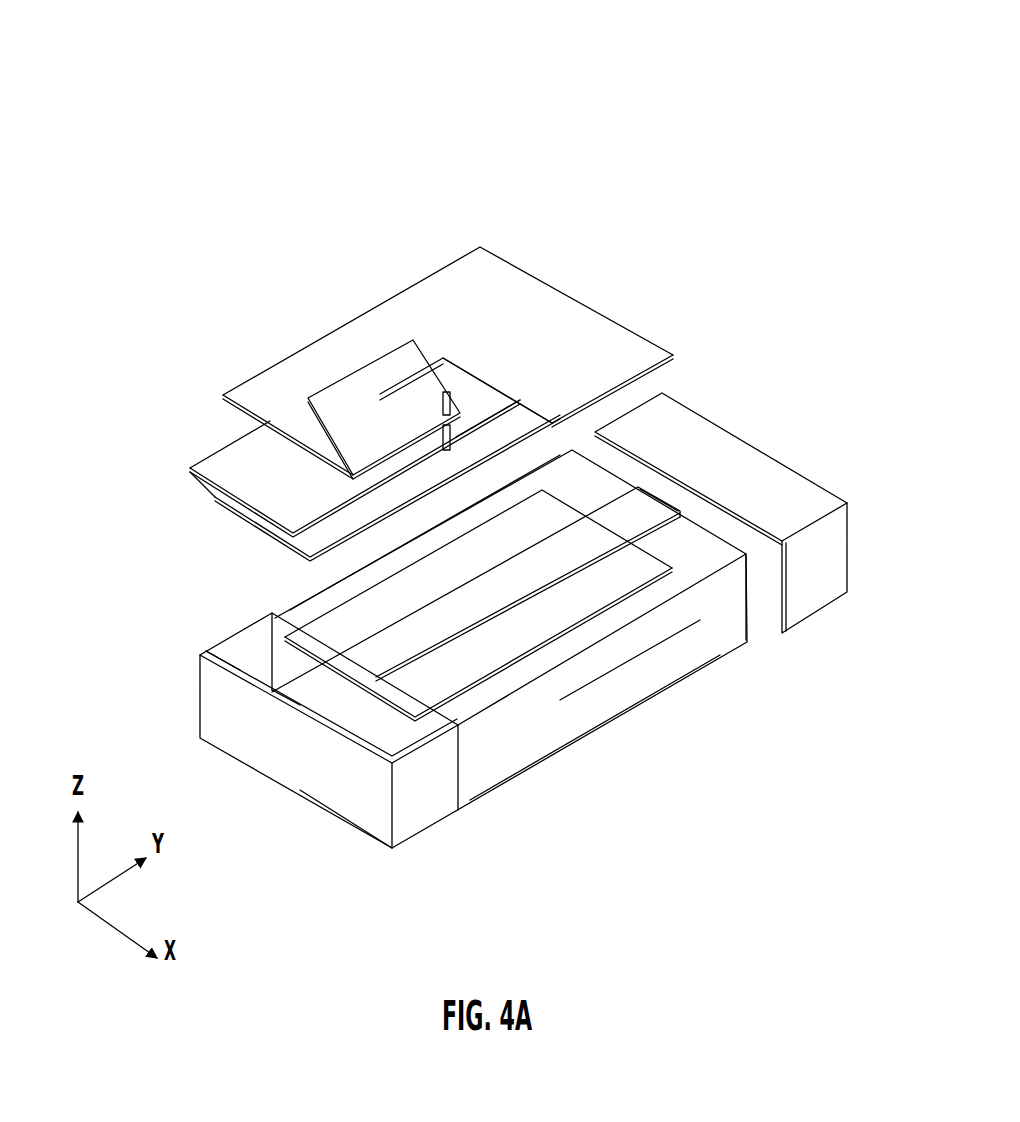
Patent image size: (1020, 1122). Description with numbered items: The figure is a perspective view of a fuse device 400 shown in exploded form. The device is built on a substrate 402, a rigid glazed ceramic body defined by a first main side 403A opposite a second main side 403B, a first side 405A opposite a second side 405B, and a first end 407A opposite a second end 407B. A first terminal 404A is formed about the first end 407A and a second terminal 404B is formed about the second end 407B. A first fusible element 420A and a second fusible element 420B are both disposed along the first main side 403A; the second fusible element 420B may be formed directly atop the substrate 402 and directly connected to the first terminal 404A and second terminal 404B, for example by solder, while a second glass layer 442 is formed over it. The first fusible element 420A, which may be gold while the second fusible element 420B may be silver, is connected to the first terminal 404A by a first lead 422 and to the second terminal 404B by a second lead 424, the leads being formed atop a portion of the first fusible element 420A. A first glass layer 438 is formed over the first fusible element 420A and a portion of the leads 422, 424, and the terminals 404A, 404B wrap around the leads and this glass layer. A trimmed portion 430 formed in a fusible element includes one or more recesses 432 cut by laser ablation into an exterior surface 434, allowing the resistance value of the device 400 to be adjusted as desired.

The fuse device 400 is at (763, 150).
The substrate 402 is at (582, 706).
The first main side 403A is at (316, 612).
The second main side 403B is at (550, 752).
The first terminal 404A is at (428, 808).
The second terminal 404B is at (776, 478).
The first side 405A is at (234, 641).
The second side 405B is at (660, 667).
The first end 407A is at (358, 850).
The second end 407B is at (756, 617).
The first fusible element 420A is at (497, 418).
The second fusible element 420B is at (316, 688).
The first lead 422 is at (248, 478).
The second lead 424 is at (640, 349).
The trimmed portion 430 is at (455, 433).
The recess 432 is at (483, 428).
The exterior surface 434 is at (388, 492).
The first glass layer 438 is at (416, 330).
The second glass layer 442 is at (590, 592).